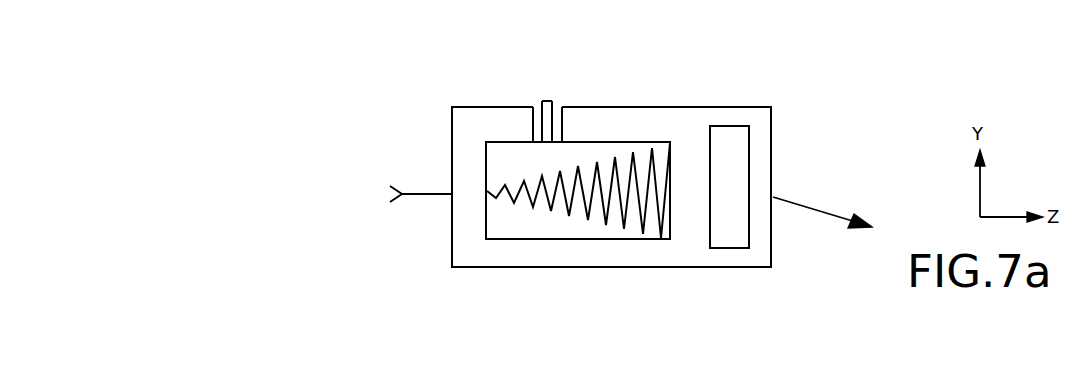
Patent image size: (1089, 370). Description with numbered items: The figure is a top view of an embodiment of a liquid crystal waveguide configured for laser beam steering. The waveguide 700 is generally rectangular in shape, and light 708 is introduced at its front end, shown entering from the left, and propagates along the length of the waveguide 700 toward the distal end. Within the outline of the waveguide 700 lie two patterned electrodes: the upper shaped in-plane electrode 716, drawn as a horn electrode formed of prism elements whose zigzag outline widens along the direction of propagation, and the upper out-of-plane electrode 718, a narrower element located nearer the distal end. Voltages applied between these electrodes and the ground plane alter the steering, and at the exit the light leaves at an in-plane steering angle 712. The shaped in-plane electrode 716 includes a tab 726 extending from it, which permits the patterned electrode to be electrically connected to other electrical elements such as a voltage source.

The waveguide 700 is at (712, 78).
The light 708 is at (413, 194).
The in-plane steering angle 712 is at (830, 215).
The upper shaped in-plane electrode 716 is at (605, 239).
The upper out-of-plane electrode 718 is at (749, 168).
The tab 726 is at (547, 101).